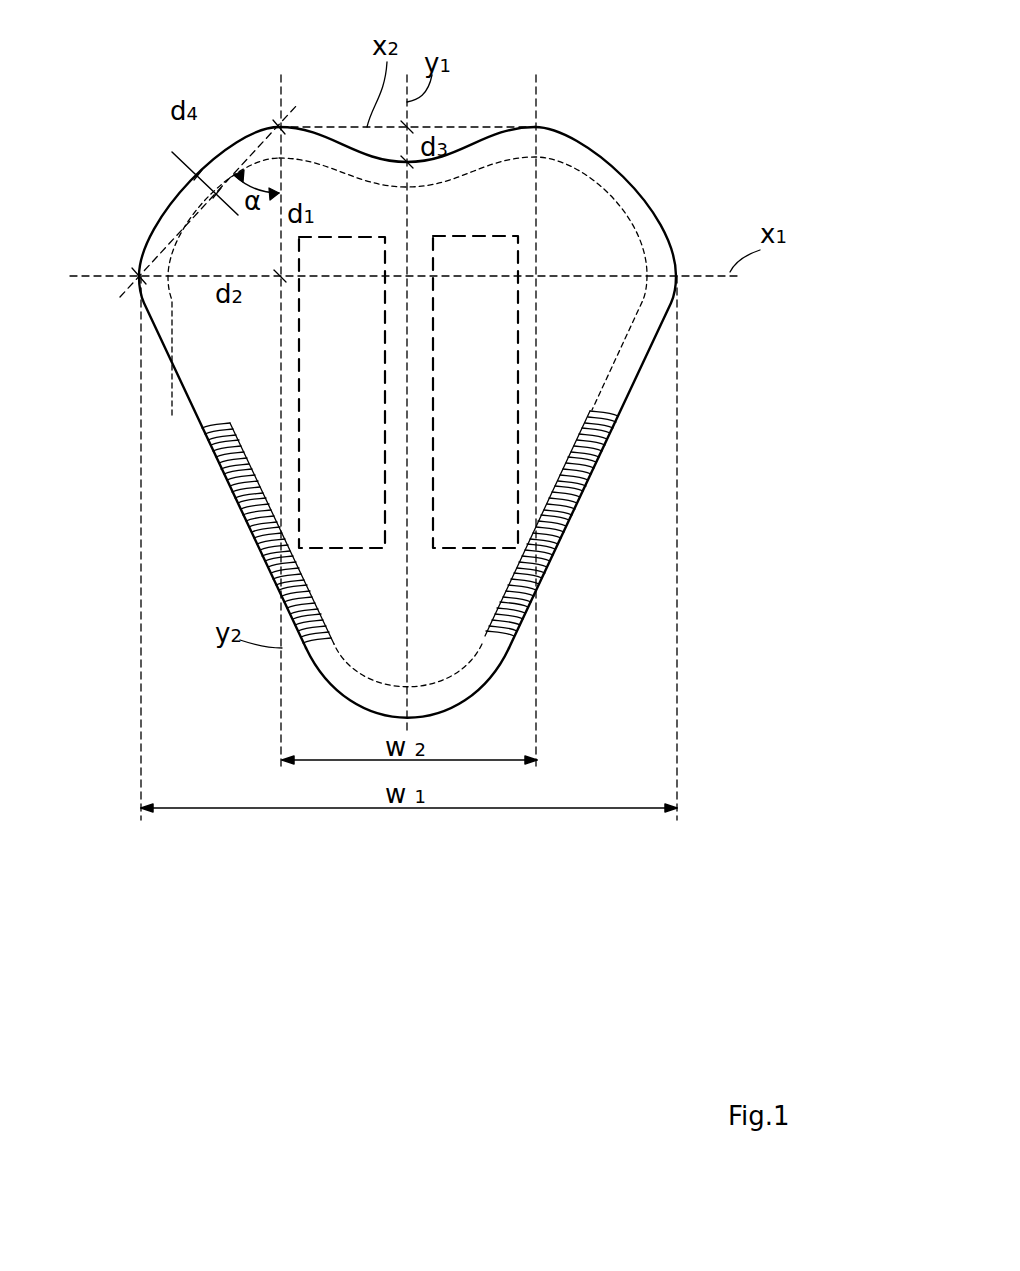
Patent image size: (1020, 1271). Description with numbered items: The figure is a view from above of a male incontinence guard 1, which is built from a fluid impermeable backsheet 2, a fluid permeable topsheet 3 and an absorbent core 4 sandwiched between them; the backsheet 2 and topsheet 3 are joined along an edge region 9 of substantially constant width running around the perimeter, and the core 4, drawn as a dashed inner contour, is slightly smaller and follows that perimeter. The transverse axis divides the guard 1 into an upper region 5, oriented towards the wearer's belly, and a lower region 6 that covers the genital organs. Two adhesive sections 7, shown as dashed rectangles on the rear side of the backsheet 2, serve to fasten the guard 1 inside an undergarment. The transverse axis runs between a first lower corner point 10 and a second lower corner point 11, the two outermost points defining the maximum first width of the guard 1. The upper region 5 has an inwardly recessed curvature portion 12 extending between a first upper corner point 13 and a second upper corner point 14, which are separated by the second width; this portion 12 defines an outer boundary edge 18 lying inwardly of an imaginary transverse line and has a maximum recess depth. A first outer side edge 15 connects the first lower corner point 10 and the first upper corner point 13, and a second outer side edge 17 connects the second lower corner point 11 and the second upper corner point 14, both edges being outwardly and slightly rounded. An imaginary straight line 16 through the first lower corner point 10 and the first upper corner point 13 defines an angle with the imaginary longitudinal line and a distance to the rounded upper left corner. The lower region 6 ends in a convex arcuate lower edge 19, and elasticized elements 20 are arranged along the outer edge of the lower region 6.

The incontinence guard 1 is at (640, 127).
The backsheet 2 is at (230, 375).
The topsheet 3 is at (220, 458).
The absorbent core 4 is at (598, 398).
The upper region 5 is at (133, 205).
The lower region 6 is at (120, 348).
The adhesive sections 7 is at (345, 530).
The edge region 9 is at (627, 377).
The first lower corner point 10 is at (139, 277).
The second lower corner point 11 is at (676, 276).
The inwardly recessed curvature portion 12 is at (472, 188).
The first upper corner point 13 is at (279, 127).
The second upper corner point 14 is at (535, 127).
The first outer side edge 15 is at (183, 187).
The imaginary straight line 16 is at (253, 147).
The second outer side edge 17 is at (640, 197).
The outer boundary edge 18 is at (327, 140).
The lower edge 19 is at (345, 702).
The elasticized elements 20 is at (247, 523).